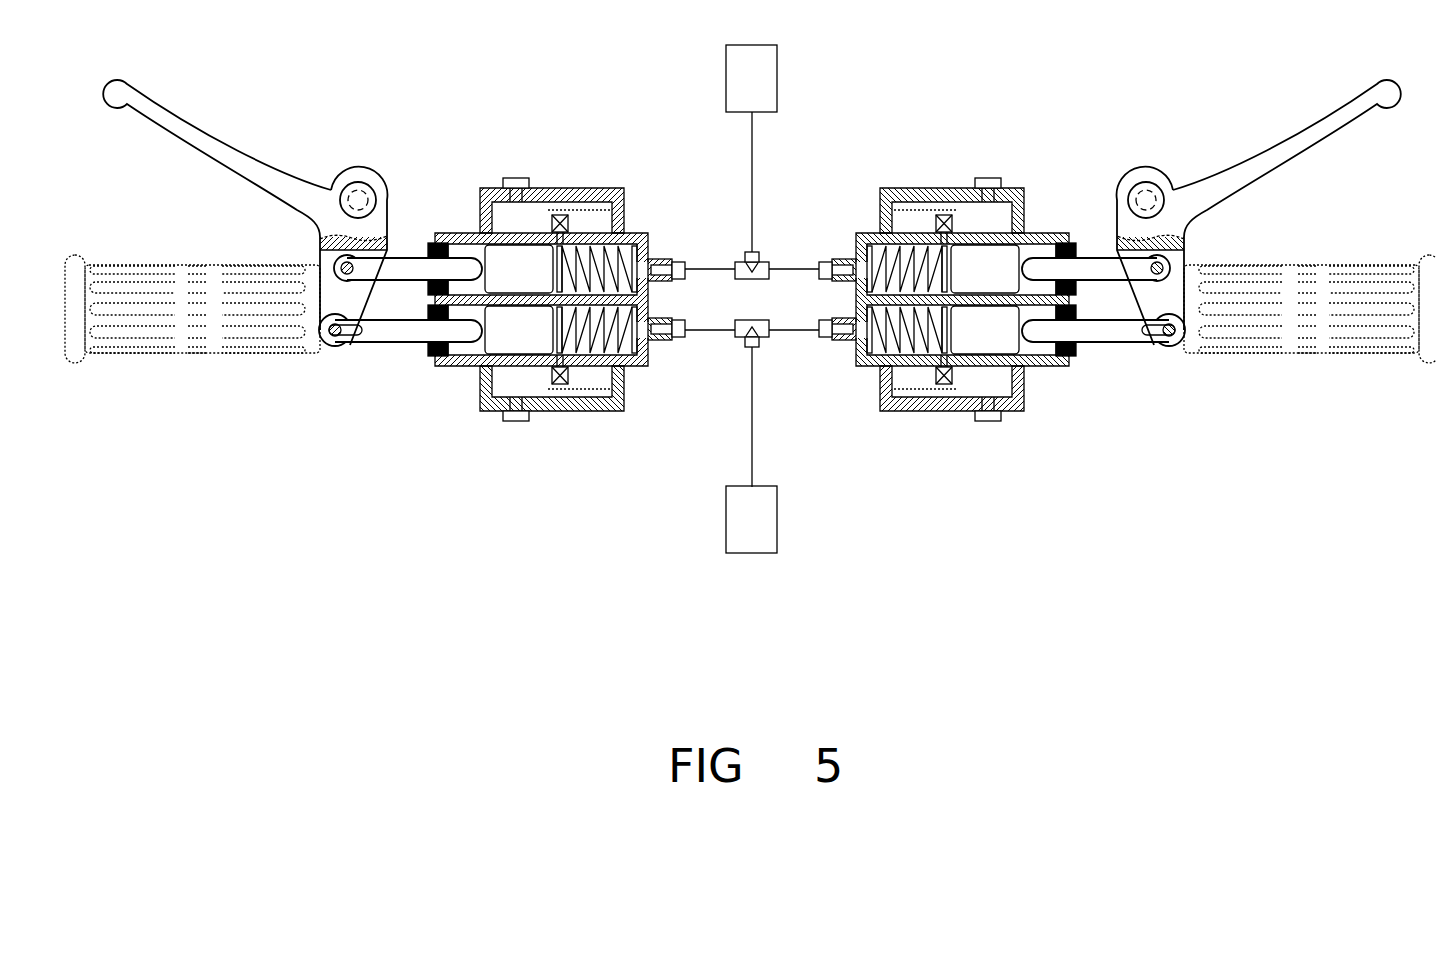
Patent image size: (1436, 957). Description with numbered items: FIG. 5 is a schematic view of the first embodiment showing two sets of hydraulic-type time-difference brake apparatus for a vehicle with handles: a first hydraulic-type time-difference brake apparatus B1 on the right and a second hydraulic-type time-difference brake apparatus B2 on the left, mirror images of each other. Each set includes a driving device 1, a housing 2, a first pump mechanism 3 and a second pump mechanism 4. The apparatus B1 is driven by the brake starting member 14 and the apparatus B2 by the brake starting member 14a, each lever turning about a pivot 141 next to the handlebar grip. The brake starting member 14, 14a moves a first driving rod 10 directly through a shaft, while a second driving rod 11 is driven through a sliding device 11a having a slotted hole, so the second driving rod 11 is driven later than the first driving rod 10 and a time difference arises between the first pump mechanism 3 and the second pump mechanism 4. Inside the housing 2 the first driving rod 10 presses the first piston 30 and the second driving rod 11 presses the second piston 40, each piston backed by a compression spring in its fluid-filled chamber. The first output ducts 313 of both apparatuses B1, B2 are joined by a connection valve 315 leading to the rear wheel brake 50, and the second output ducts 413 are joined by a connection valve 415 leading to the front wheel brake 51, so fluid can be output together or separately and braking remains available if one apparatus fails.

The driving device 1 is at (397, 305).
The housing 2 is at (470, 232).
The first pump mechanism 3 is at (594, 188).
The second pump mechanism 4 is at (593, 411).
The first driving rod 10 is at (410, 257).
The second driving rod 11 is at (408, 343).
The sliding device 11a is at (352, 344).
The brake starting member 14 is at (1256, 158).
The brake starting member 14a is at (240, 158).
The lever pivot 141 is at (358, 188).
The first piston 30 is at (509, 276).
The second piston 40 is at (509, 336).
The first output duct 313 is at (678, 258).
The second output duct 413 is at (678, 342).
The connection valve 315 is at (748, 253).
The connection valve 415 is at (748, 346).
The rear wheel brake 50 is at (742, 86).
The front wheel brake 51 is at (742, 527).
The first hydraulic-type time-difference brake apparatus B1 is at (1010, 488).
The second hydraulic-type time-difference brake apparatus B2 is at (472, 488).